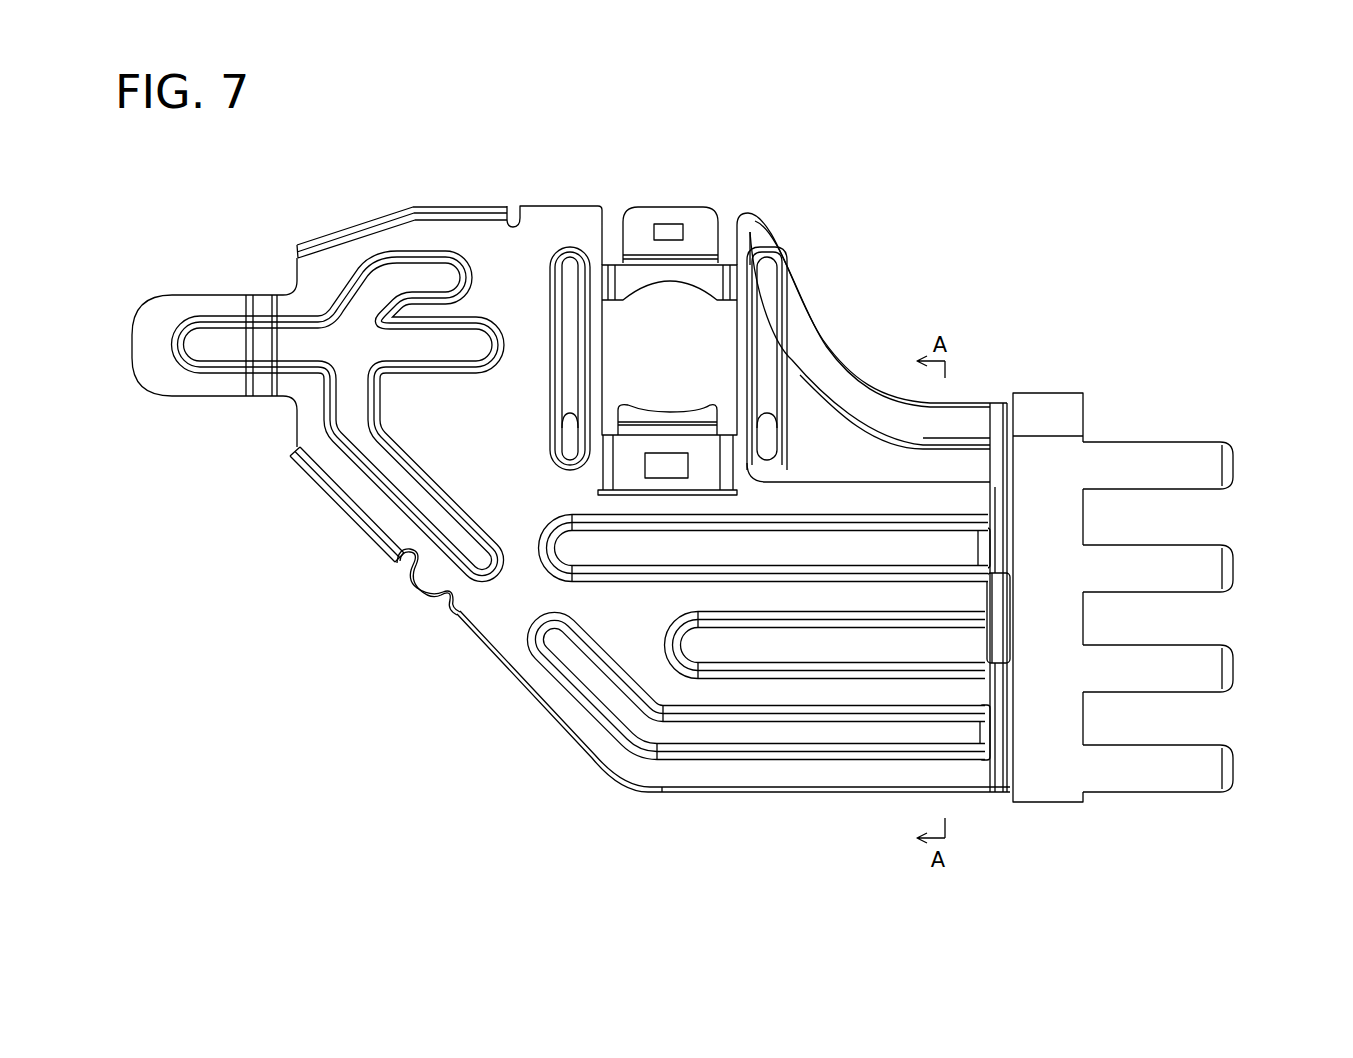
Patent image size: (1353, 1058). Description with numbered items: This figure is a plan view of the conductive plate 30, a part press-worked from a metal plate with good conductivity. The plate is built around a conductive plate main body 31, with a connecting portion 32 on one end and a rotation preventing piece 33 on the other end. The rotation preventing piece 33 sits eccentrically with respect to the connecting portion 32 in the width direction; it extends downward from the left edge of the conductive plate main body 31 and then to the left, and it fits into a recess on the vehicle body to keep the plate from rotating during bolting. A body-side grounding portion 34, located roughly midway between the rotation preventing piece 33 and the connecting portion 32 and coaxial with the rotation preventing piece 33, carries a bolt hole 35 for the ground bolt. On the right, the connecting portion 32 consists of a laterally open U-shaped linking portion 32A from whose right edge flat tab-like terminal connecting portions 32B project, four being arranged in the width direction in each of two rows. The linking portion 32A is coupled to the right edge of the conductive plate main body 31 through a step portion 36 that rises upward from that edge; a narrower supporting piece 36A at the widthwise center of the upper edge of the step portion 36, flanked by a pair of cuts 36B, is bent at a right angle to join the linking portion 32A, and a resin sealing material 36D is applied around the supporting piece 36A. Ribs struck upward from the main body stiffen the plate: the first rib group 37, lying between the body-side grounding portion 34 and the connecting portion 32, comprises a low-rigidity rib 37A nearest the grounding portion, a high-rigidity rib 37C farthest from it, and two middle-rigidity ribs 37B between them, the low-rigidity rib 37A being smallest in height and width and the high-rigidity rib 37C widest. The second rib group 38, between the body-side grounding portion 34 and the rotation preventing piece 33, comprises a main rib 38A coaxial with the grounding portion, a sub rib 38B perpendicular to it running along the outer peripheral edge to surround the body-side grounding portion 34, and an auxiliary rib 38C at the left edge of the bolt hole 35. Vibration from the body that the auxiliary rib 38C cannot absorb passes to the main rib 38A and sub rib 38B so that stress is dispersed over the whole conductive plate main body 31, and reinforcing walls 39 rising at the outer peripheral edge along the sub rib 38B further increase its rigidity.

The conductive plate 30 is at (795, 185).
The conductive plate main body 31 is at (578, 174).
The connecting portion 32 is at (1102, 320).
The linking portion 32A is at (1058, 448).
The terminal connecting portions 32B is at (1208, 466).
The rotation preventing piece 33 is at (163, 312).
The body-side grounding portion 34 is at (633, 275).
The bolt hole 35 is at (602, 358).
The step portion 36 is at (1004, 403).
The supporting piece 36A is at (998, 628).
The cuts 36B is at (993, 515).
The sealing material 36D is at (990, 588).
The first rib group 37 is at (715, 760).
The low-rigidity rib 37A is at (787, 380).
The middle-rigidity ribs 37B is at (858, 543).
The high-rigidity rib 37C is at (848, 733).
The second rib group 38 is at (357, 480).
The main rib 38A is at (285, 337).
The sub rib 38B is at (433, 280).
The auxiliary rib 38C is at (568, 263).
The reinforcing walls 39 is at (368, 222).